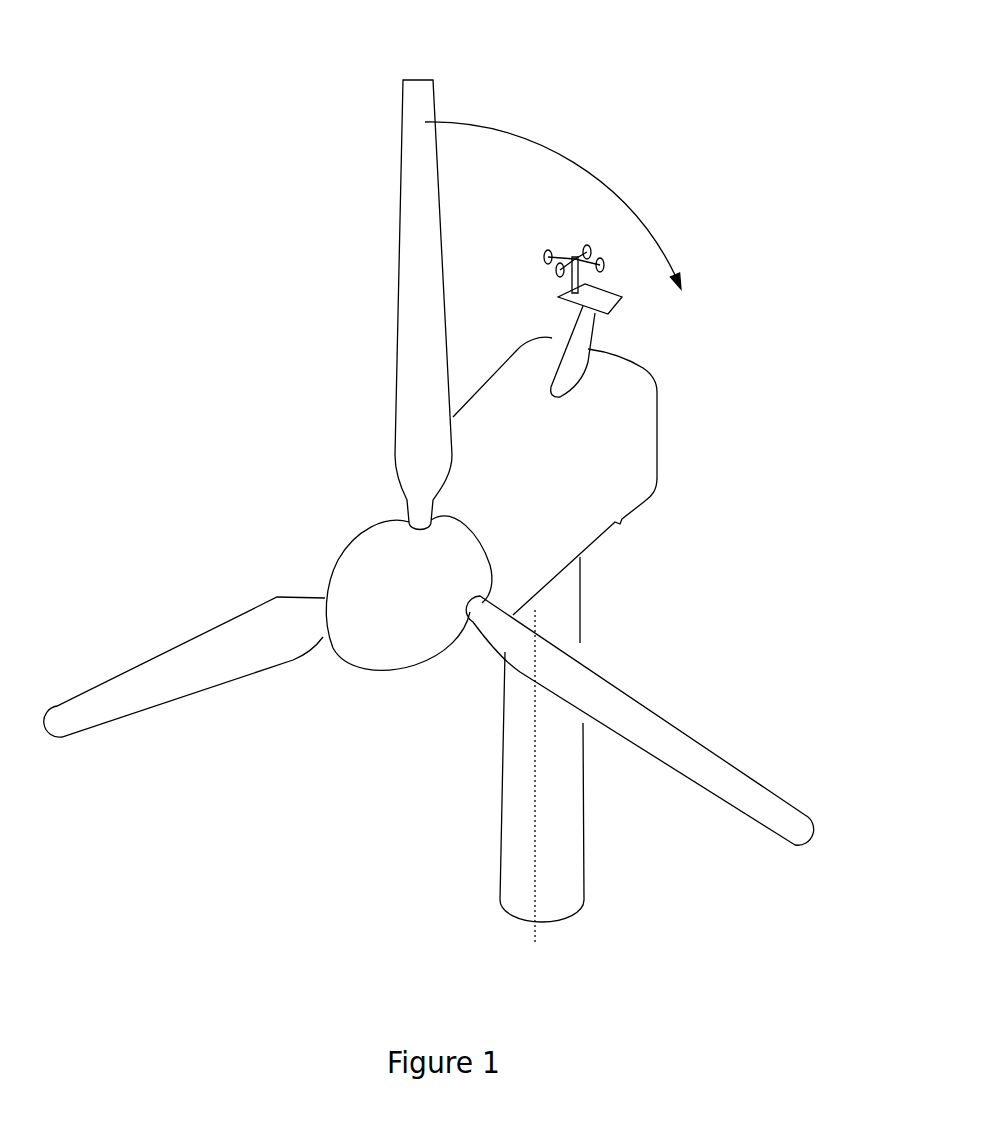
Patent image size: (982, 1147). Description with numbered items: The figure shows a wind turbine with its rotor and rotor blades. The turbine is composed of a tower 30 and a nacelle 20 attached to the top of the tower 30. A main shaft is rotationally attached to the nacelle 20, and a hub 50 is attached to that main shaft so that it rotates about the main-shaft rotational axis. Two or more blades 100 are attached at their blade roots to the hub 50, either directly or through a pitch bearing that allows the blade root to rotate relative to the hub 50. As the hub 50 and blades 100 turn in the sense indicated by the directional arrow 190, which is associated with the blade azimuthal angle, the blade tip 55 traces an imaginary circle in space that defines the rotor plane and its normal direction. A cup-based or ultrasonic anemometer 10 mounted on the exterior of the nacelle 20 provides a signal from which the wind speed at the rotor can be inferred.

The anemometer 10 is at (536, 251).
The nacelle 20 is at (657, 388).
The tower 30 is at (582, 597).
The hub 50 is at (387, 648).
The blade tip 55 is at (417, 80).
The blades 100 is at (400, 203).
The directional arrow 190 is at (606, 188).